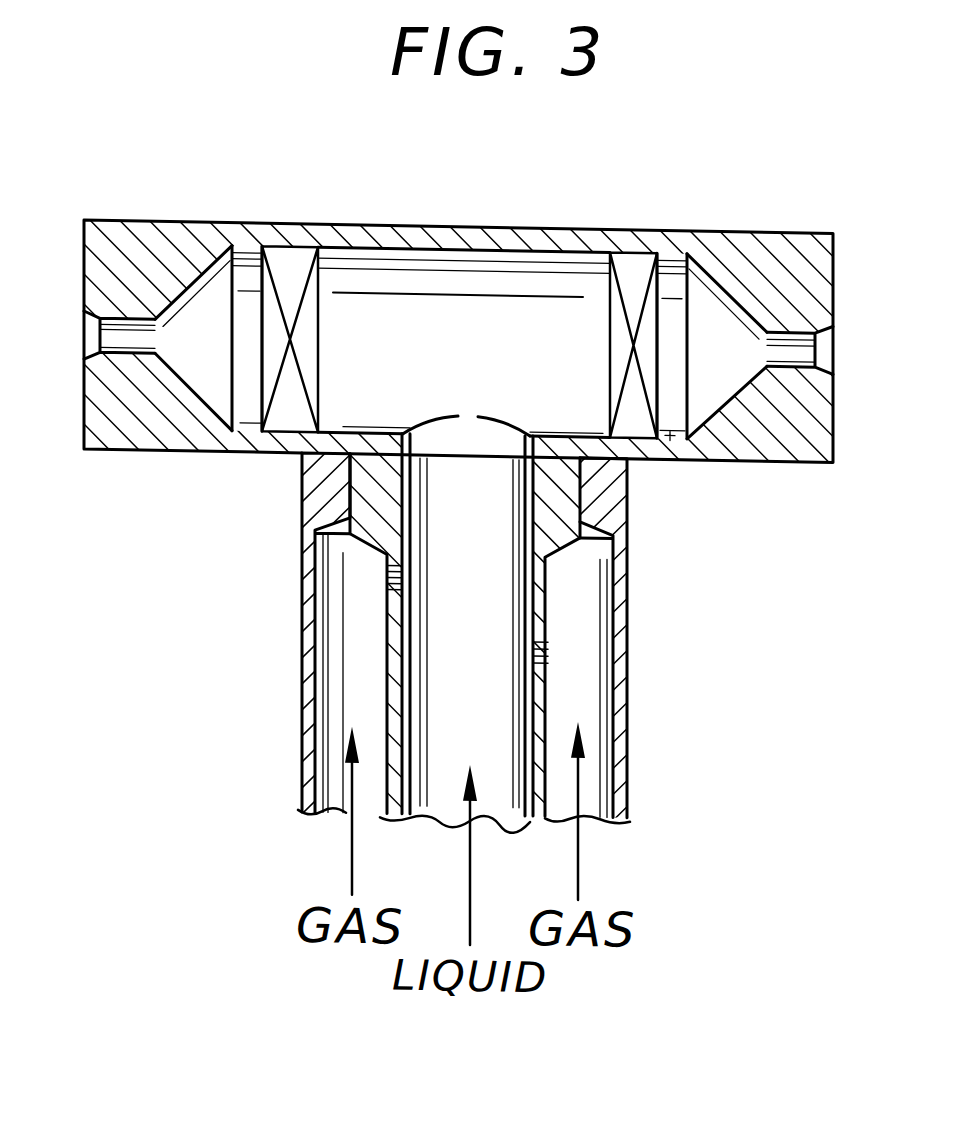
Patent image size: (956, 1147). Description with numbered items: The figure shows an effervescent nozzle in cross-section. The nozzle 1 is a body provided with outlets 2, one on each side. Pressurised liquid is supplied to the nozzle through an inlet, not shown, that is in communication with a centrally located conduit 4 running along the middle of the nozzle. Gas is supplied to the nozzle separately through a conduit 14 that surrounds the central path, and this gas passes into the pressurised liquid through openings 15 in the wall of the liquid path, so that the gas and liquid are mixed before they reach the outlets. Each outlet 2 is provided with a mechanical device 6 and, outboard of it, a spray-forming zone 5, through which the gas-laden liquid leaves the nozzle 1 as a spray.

The nozzle 1 is at (682, 213).
The outlets 2 is at (247, 390).
The centrally located conduit 4 is at (472, 554).
The spray-forming zone 5 is at (100, 340).
The mechanical device 6 is at (290, 258).
The conduit 14 is at (345, 722).
The openings 15 is at (385, 708).